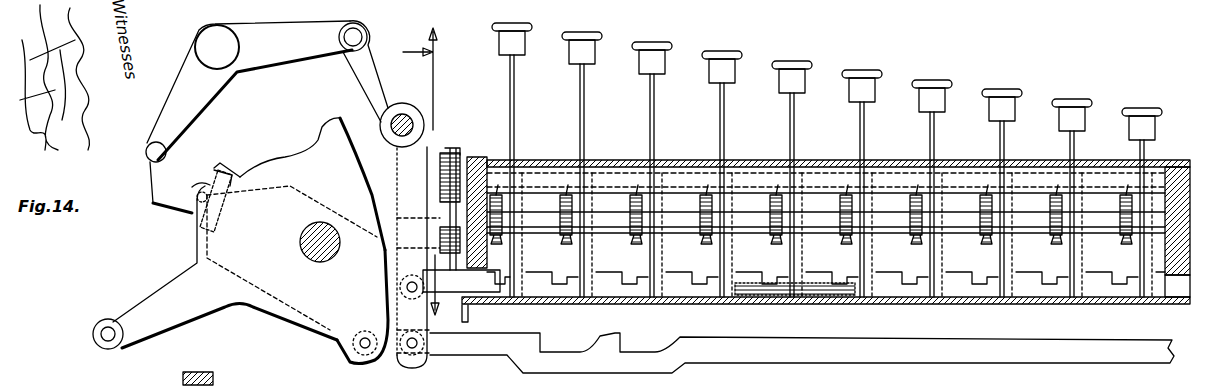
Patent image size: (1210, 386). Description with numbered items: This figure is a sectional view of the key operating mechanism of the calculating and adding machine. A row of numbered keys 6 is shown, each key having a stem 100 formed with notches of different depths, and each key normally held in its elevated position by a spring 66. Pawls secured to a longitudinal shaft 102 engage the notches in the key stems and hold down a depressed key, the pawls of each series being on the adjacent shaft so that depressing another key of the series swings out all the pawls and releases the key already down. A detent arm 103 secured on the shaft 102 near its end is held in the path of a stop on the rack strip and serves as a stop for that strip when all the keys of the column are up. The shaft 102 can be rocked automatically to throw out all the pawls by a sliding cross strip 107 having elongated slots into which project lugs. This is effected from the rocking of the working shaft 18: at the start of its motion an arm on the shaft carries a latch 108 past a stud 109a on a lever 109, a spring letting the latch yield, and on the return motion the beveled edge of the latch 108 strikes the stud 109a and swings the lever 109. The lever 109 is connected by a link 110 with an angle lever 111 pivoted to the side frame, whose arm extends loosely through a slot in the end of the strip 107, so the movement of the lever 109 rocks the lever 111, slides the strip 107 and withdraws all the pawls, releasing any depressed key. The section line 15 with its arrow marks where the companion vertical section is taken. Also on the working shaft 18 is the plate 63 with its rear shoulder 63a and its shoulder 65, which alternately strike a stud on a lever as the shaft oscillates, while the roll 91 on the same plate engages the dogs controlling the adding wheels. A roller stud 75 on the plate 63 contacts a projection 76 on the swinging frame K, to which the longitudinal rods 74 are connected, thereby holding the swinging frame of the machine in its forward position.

The key 6 is at (1058, 104).
The section line 15 is at (430, 169).
The working shaft 18 is at (288, 250).
The plate 63 is at (225, 274).
The rear shoulder 63a is at (245, 168).
The shoulder 65 is at (331, 121).
The spring 66 is at (811, 224).
The longitudinal rod 74 is at (923, 334).
The roller stud 75 is at (335, 340).
The projection 76 is at (377, 328).
The roll 91 is at (93, 334).
The stem 100 is at (1000, 156).
The longitudinal shaft 102 is at (748, 184).
The detent arm 103 is at (470, 318).
The sliding cross strip 107 is at (470, 156).
The latch 108 is at (171, 212).
The lever 109 is at (231, 90).
The stud 109a is at (129, 163).
The link 110 is at (356, 30).
The angle lever 111 is at (461, 282).
The swinging frame K is at (425, 184).